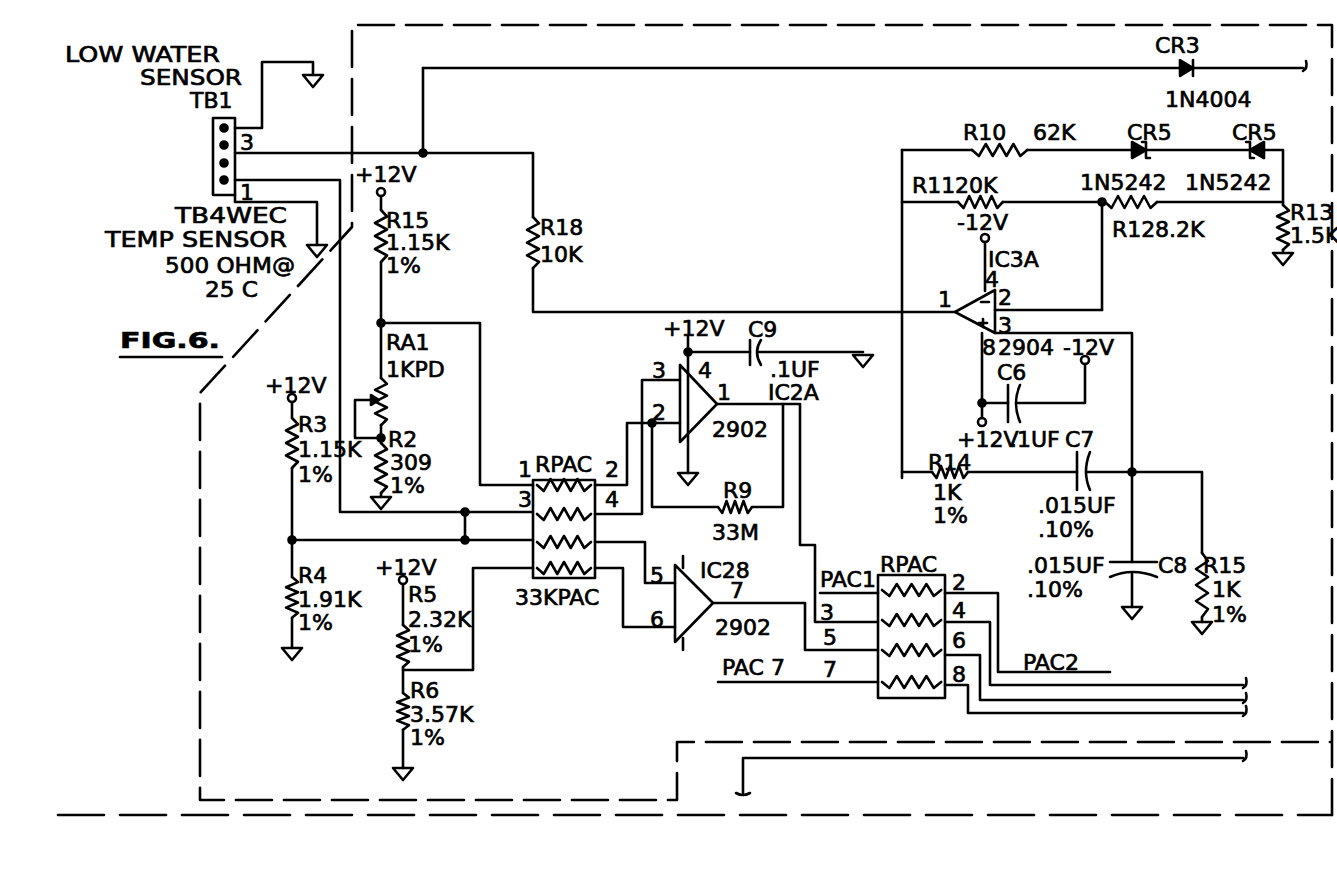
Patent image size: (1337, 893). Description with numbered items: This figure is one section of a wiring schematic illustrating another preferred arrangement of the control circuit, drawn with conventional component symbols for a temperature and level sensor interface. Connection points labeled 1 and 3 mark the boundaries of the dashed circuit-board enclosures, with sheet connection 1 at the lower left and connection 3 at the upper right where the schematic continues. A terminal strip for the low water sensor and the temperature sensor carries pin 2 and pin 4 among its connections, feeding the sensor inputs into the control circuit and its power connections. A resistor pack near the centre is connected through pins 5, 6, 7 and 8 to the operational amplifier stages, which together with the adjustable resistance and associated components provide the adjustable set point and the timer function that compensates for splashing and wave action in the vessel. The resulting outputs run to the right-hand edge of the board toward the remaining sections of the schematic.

The controller circuit board 1 is at (695, 807).
The terminal block TB1 pin 2 (temperature sensor input) 2 is at (384, 349).
The sensor interface circuit 3 is at (766, 420).
The terminal block TB1 pin 4 (low water sensor ground) 4 is at (279, 95).
The resistor pack RPAC pin 5 is at (441, 531).
The resistor pack RPAC pin 6 is at (635, 549).
The resistor pack RPAC pin 7 is at (497, 606).
The resistor pack RPAC pin 8 is at (635, 584).